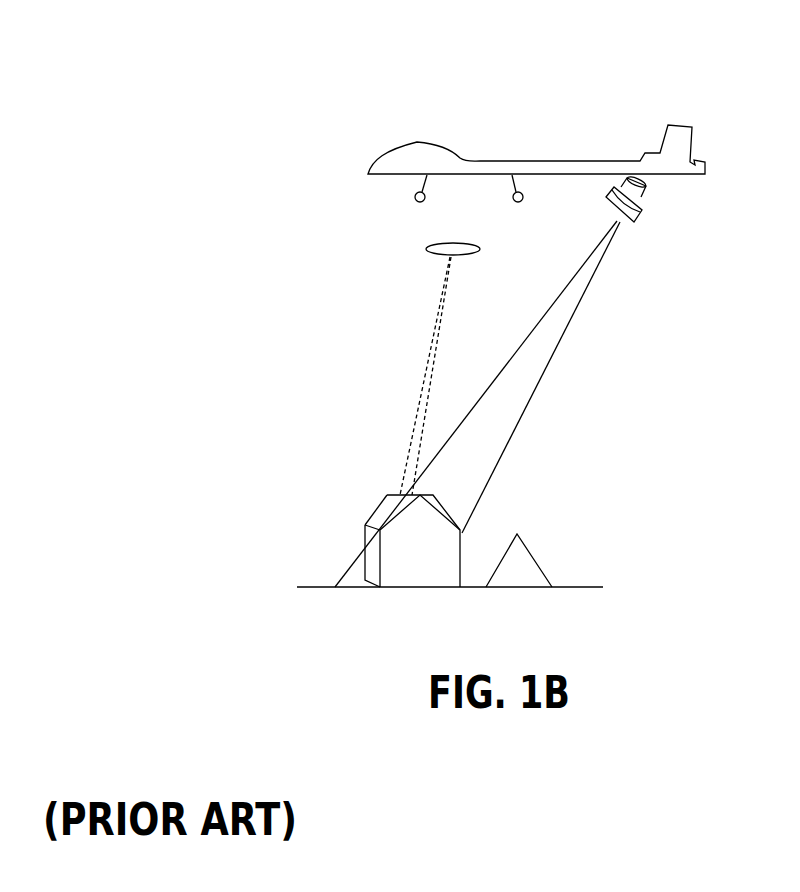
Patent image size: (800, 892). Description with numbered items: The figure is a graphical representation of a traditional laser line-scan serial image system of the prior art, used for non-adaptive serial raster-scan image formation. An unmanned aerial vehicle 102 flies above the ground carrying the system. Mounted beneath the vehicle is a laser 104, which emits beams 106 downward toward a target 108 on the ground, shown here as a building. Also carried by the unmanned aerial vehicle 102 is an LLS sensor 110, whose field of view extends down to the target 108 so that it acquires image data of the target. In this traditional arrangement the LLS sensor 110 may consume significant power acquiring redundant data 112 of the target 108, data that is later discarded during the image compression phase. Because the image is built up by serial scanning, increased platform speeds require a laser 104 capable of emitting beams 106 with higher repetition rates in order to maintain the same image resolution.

The unmanned aerial vehicle 102 is at (696, 138).
The laser 104 is at (427, 248).
The beam 106 is at (430, 350).
The target 108 is at (377, 507).
The LLS sensor 110 is at (644, 212).
The redundant data 112 is at (533, 393).